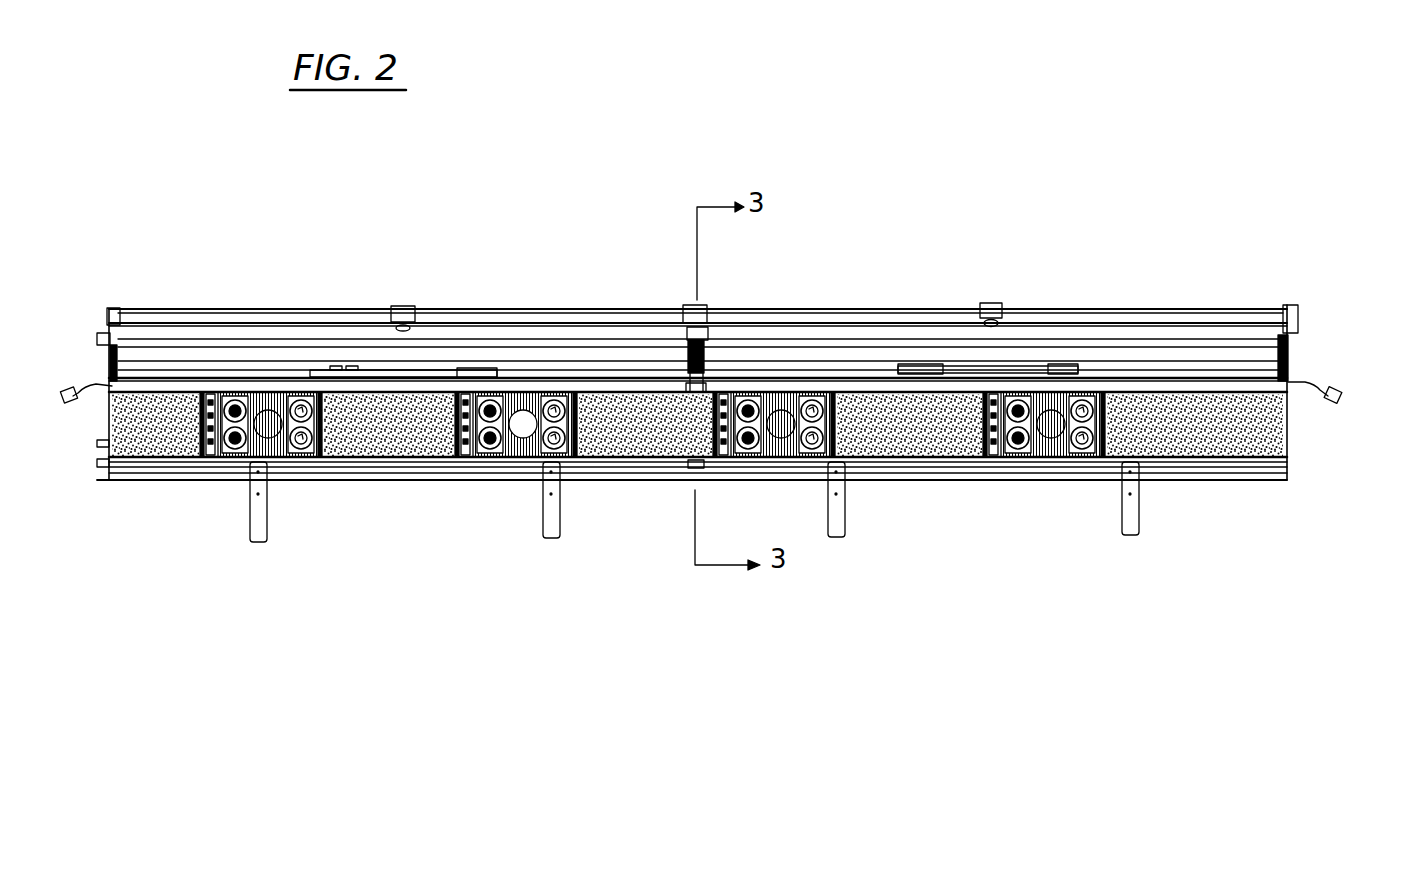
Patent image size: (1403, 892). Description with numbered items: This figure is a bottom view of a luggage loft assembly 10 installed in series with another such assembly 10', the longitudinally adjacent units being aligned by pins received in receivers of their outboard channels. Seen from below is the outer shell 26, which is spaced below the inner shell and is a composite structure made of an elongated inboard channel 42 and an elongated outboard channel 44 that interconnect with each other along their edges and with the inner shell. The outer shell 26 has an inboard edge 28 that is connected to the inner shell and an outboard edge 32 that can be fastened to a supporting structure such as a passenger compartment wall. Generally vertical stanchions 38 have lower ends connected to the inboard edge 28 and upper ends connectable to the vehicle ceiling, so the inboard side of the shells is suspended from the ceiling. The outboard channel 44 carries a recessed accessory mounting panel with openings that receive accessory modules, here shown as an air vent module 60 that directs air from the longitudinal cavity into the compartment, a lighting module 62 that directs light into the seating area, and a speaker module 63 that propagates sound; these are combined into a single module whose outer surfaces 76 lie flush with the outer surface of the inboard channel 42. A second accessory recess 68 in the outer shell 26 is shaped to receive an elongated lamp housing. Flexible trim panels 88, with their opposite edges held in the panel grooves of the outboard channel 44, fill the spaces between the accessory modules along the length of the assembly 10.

The luggage loft assembly 10 is at (698, 401).
The other loft assembly 10' is at (241, 320).
The outer shell 26 is at (912, 458).
The inboard edge of outer shell 28 is at (500, 306).
The outboard edge of outer shell 32 is at (383, 482).
The stanchions 38 is at (402, 308).
The inboard channel 42 is at (1248, 382).
The outboard channel 44 is at (1163, 457).
The air vent module 60 is at (235, 448).
The lighting module 62 is at (304, 445).
The speaker module 63 is at (280, 458).
The second accessory recess 68 is at (1237, 365).
The outer surfaces of accessory modules 76 is at (288, 392).
The flexible trim panels 88 is at (175, 440).